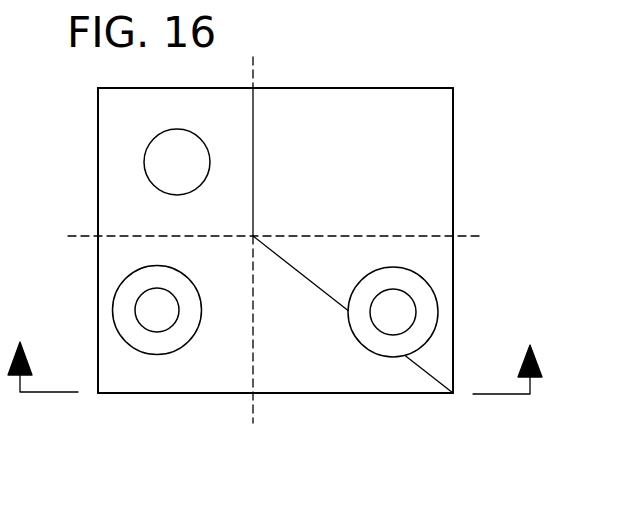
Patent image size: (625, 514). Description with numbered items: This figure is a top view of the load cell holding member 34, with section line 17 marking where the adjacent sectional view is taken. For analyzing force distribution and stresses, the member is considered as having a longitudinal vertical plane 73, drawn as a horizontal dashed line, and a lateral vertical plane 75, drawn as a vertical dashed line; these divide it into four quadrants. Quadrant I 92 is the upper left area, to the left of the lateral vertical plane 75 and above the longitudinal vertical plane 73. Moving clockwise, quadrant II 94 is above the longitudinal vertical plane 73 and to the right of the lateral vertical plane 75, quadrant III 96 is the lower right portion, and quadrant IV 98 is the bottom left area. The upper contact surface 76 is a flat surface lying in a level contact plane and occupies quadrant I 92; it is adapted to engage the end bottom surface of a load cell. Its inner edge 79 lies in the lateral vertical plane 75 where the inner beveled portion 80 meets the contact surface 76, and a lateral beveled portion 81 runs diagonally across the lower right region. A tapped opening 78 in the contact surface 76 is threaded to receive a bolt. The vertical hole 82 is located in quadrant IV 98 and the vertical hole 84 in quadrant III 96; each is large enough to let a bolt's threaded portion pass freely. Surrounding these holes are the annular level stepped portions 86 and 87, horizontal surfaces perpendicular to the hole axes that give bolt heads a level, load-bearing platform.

The section line 17- 17 is at (275, 353).
The load cell holding member 34 is at (417, 145).
The longitudinal vertical plane 73 is at (465, 236).
The lateral vertical plane 75 is at (252, 408).
The upper contact surface 76 is at (120, 130).
The tapped opening 78 is at (148, 158).
The inner edge 79 is at (253, 128).
The inner beveled portion 80 is at (317, 140).
The lateral beveled portion 81 is at (228, 345).
The vertical hole 82 is at (148, 293).
The vertical hole 84 is at (393, 294).
The annular level stepped portion 86 is at (122, 308).
The annular level stepped portion 87 is at (423, 308).
The quadrant I 92 is at (120, 103).
The quadrant II 94 is at (433, 107).
The quadrant III 96 is at (420, 380).
The quadrant IV 98 is at (118, 375).